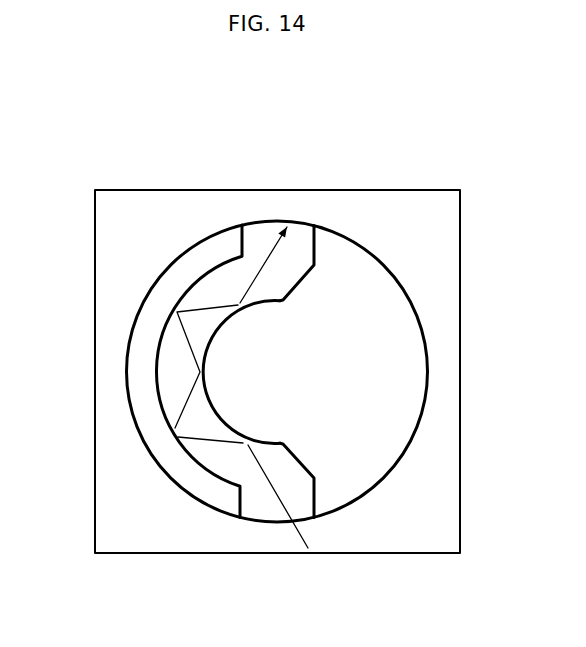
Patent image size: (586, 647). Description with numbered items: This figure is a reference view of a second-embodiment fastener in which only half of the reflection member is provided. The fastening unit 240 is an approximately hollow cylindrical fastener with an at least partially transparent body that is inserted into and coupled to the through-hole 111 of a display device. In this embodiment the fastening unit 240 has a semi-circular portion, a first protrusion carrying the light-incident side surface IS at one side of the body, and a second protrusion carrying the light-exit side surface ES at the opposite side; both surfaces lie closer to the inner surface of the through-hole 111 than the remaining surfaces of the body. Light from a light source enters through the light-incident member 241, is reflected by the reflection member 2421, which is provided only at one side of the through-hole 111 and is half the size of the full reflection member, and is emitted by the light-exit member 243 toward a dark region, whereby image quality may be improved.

The through-hole 111 is at (404, 272).
The fastening unit 240 is at (221, 374).
The light-incident member 241 is at (258, 497).
The light-exit member 243 is at (255, 242).
The reflection member 2421 is at (175, 372).
The light-exit side surface ES is at (294, 238).
The light-incident side surface IS is at (278, 523).